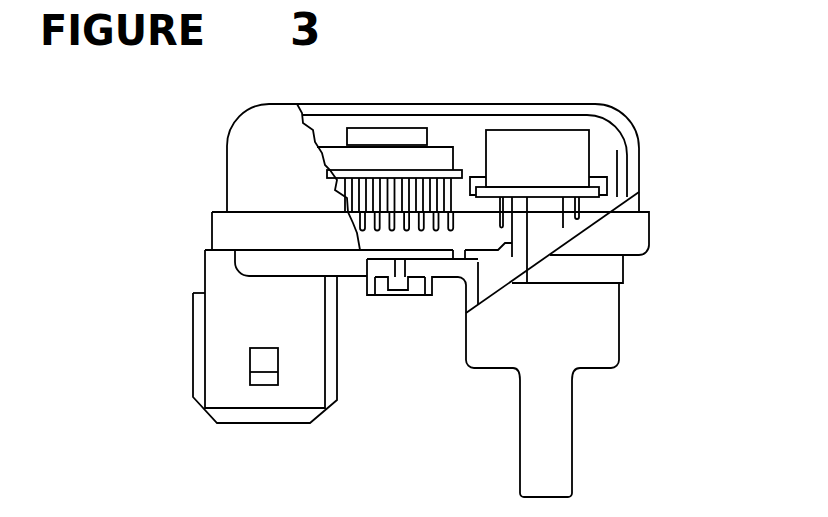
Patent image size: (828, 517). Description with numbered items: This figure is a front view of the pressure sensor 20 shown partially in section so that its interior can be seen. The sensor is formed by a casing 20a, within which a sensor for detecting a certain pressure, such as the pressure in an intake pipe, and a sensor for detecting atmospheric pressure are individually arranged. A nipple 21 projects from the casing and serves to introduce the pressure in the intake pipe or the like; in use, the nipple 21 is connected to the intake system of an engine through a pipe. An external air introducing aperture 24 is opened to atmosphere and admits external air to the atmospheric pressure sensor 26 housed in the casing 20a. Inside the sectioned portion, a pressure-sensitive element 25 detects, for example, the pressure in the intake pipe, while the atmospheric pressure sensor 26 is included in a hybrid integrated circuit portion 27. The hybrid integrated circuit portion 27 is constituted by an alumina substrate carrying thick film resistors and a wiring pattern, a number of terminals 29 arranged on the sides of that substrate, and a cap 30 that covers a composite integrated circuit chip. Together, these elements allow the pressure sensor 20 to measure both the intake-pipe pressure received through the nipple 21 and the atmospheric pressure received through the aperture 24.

The pressure sensor 20 is at (648, 167).
The casing 20a is at (649, 235).
The nipple 21 is at (537, 228).
The external air introducing aperture 24 is at (393, 298).
The pressure-sensitive element 25 is at (567, 152).
The atmospheric pressure sensor 26 is at (436, 124).
The hybrid integrated circuit portion 27 is at (435, 167).
The terminals 29 is at (340, 198).
The cap 30 is at (375, 135).